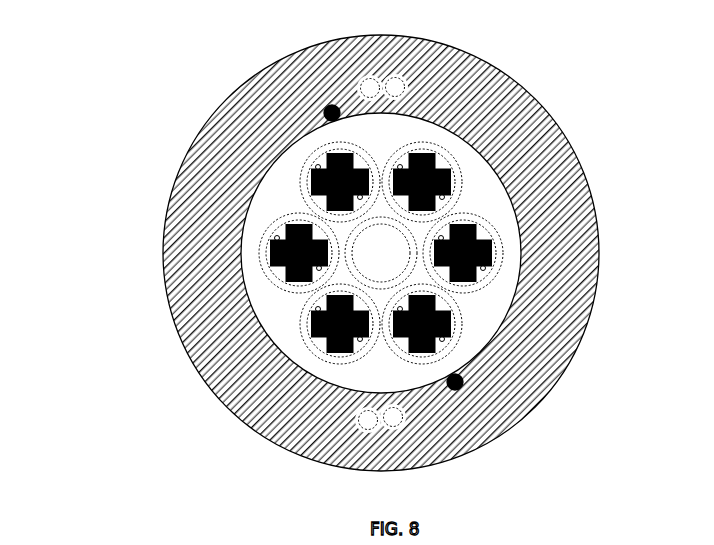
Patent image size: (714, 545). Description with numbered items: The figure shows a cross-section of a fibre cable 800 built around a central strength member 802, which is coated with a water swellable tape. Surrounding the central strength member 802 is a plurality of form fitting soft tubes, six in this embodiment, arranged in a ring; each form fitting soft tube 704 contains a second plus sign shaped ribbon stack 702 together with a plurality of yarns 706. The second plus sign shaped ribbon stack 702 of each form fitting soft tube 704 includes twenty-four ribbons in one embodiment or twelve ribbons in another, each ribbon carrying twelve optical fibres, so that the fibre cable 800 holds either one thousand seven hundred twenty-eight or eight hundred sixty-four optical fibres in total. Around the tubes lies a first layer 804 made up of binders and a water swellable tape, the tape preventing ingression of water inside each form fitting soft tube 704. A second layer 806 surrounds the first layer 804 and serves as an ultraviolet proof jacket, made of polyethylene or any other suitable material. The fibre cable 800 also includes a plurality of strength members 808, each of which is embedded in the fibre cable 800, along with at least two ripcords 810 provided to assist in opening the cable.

The fibre cable 800 is at (50, 47).
The second plus sign shaped ribbon stack 702 is at (592, 201).
The form fitting soft tube 704 is at (598, 232).
The plurality of yarns 706 is at (320, 173).
The central strength member 802 is at (393, 243).
The first layer 804 is at (495, 152).
The second layer 806 is at (550, 303).
The plurality of strength members 808 is at (404, 418).
The ripcords 810 is at (455, 382).